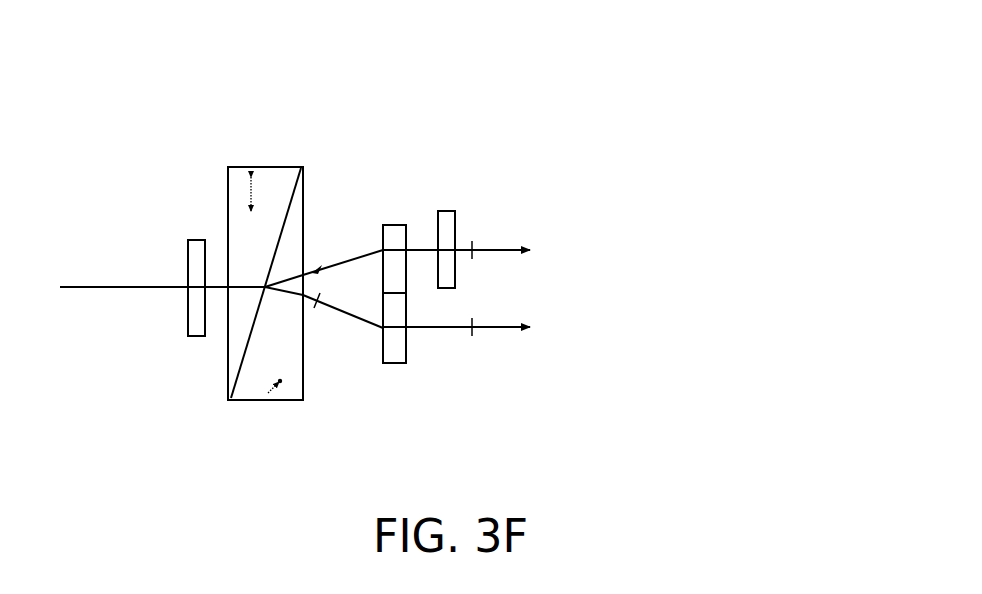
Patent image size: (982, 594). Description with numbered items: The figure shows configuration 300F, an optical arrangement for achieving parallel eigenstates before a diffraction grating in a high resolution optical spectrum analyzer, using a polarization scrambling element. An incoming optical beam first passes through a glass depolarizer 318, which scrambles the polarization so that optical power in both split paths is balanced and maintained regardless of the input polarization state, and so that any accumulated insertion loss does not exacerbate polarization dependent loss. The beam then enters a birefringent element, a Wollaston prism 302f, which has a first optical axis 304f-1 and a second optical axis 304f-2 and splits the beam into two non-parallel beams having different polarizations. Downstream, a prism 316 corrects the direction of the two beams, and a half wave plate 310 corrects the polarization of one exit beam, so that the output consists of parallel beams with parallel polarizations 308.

The configuration 300F is at (477, 53).
The Wollaston prism 302f is at (272, 165).
The first optical axis 304f-1 is at (242, 207).
The second optical axis 304f-2 is at (256, 394).
The parallel beams with parallel polarizations 308 is at (546, 256).
The half wave plate 310 is at (447, 209).
The prism 316 is at (401, 368).
The glass depolarizer 318 is at (186, 342).